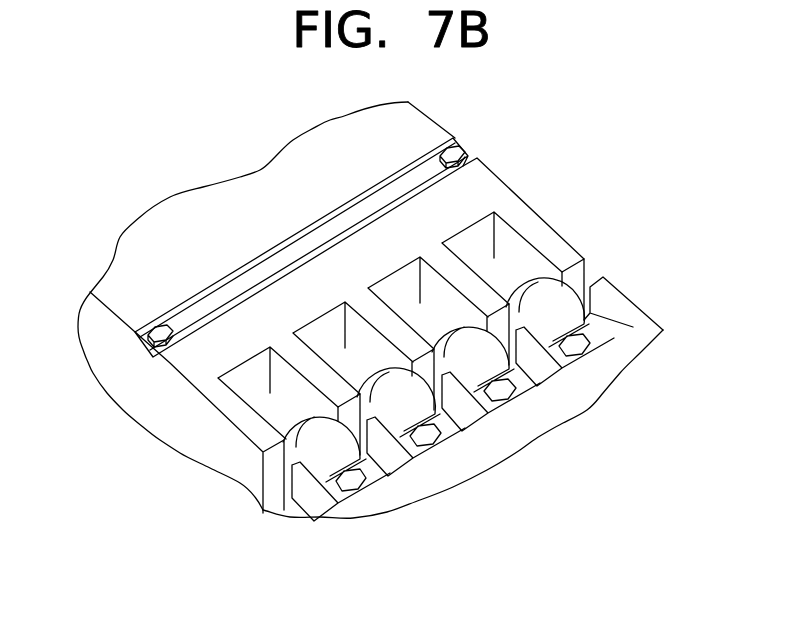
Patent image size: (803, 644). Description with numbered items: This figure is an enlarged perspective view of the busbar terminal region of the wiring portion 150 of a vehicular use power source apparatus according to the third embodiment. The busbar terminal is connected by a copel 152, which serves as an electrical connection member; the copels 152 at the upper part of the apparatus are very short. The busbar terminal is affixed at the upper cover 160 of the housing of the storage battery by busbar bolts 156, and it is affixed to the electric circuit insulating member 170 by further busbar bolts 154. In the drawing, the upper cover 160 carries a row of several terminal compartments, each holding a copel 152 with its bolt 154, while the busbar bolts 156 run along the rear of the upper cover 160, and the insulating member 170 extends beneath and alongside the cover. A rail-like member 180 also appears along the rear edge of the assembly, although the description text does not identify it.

The wiring portion 150 is at (207, 599).
The copel 152 is at (322, 470).
The busbar bolt 154 is at (341, 508).
The busbar bolt 156 is at (232, 423).
The upper cover 160 is at (485, 197).
The electric circuit insulating member 170 is at (572, 385).
The rail with screws 180 is at (430, 140).